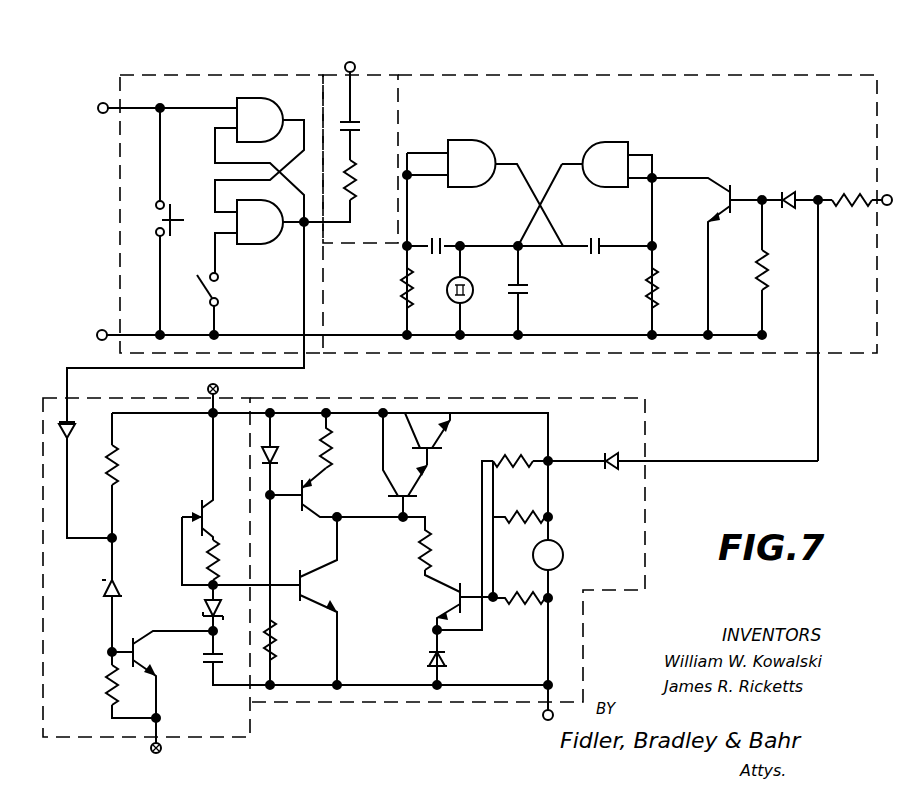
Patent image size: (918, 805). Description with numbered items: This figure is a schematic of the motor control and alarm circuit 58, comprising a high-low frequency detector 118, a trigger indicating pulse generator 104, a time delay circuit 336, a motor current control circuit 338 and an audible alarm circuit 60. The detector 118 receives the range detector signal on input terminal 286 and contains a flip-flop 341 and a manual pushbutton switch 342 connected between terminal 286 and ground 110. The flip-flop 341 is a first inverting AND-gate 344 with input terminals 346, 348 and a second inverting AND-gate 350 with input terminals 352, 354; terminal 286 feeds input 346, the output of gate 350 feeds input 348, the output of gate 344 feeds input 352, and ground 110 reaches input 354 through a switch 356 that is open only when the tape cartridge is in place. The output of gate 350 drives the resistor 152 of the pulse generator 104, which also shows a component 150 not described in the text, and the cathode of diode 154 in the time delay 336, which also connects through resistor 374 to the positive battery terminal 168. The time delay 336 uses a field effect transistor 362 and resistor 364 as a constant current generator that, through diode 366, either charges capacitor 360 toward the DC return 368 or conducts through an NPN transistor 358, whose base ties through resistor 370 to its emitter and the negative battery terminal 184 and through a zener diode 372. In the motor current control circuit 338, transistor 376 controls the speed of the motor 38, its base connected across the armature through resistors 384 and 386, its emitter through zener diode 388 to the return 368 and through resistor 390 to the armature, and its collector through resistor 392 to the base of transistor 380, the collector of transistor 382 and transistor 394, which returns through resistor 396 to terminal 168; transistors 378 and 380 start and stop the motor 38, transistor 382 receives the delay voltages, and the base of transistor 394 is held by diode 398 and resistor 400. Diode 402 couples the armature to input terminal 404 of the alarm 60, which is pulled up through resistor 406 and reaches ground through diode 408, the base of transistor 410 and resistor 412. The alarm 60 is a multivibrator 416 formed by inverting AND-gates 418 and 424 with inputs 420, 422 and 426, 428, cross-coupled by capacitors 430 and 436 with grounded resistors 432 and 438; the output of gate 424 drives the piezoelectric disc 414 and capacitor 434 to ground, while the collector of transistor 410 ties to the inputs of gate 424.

The motor control and alarm circuit 58 is at (508, 34).
The alarm circuit 60 is at (568, 78).
The trigger indicating pulse generator 104 is at (382, 76).
The high-low frequency detector 118 is at (195, 76).
The input terminal 286 is at (101, 103).
The ground terminal 110 is at (100, 330).
The positive battery terminal 168 is at (886, 194).
The negative battery terminal 184 is at (164, 748).
The diode 154 is at (70, 418).
The flip-flop 341 is at (292, 104).
The manual pushbutton switch 342 is at (156, 218).
The first inverting AND-gate 344 is at (278, 98).
The first input terminal 346 is at (215, 106).
The second input terminal 348 is at (215, 128).
The second inverting AND-gate 350 is at (283, 246).
The first input terminal 352 is at (215, 205).
The second input terminal 354 is at (213, 236).
The switch 356 is at (222, 288).
The capacitor 150 is at (358, 124).
The resistor 152 is at (358, 172).
The first inverting AND-gate 418 is at (505, 124).
The first input terminal 420 is at (440, 147).
The second input terminal 422 is at (434, 180).
The second inverting AND-gate 424 is at (596, 146).
The first input terminal 426 is at (640, 154).
The second input terminal 428 is at (628, 184).
The capacitor 430 is at (586, 236).
The resistor 432 is at (648, 294).
The capacitor 434 is at (526, 288).
The capacitor 436 is at (424, 236).
The resistor 438 is at (400, 270).
The piezoelectric disc 414 is at (472, 296).
The multivibrator 416 is at (626, 262).
The transistor 410 is at (722, 200).
The resistor 412 is at (754, 270).
The diode 408 is at (788, 194).
The input terminal 404 is at (822, 190).
The resistor 406 is at (840, 204).
The diode 402 is at (606, 456).
The time delay circuit 336 is at (112, 757).
The motor current control circuit 338 is at (472, 398).
The resistor 374 is at (122, 454).
The zener diode 372 is at (104, 588).
The resistor 370 is at (106, 690).
The NPN transistor 358 is at (148, 652).
The capacitor 360 is at (214, 664).
The field effect transistor 362 is at (180, 514).
The resistor 364 is at (220, 550).
The diode 366 is at (204, 612).
The diode 398 is at (274, 456).
The resistor 396 is at (338, 452).
The transistor 394 is at (306, 496).
The transistor 382 is at (322, 588).
The resistor 392 is at (414, 540).
The resistor 400 is at (280, 636).
The transistor 376 is at (452, 598).
The first transistor 378 is at (445, 444).
The second transistor 380 is at (420, 494).
The zener diode 388 is at (424, 656).
The resistor 390 is at (492, 456).
The resistor 384 is at (528, 512).
The resistor 386 is at (530, 606).
The motor 38 is at (560, 546).
The DC return 368 is at (544, 718).